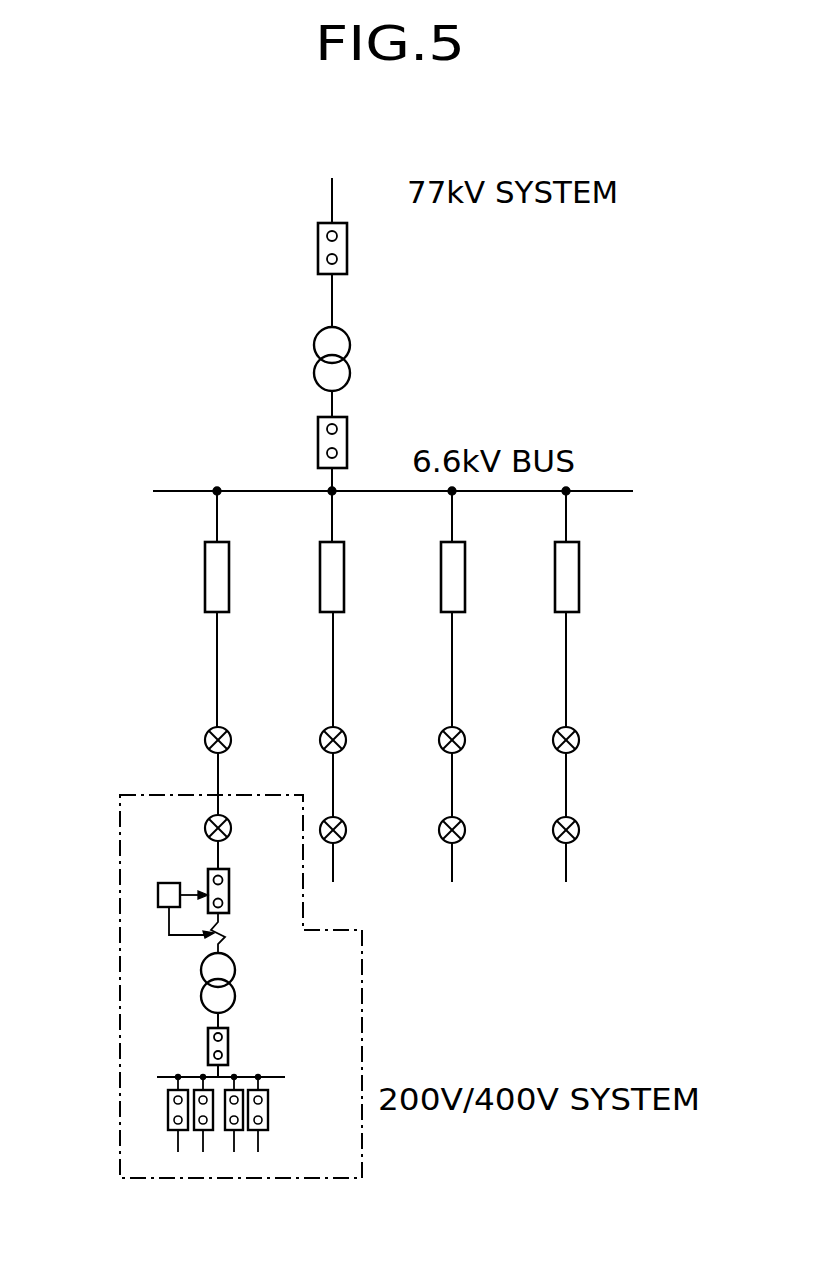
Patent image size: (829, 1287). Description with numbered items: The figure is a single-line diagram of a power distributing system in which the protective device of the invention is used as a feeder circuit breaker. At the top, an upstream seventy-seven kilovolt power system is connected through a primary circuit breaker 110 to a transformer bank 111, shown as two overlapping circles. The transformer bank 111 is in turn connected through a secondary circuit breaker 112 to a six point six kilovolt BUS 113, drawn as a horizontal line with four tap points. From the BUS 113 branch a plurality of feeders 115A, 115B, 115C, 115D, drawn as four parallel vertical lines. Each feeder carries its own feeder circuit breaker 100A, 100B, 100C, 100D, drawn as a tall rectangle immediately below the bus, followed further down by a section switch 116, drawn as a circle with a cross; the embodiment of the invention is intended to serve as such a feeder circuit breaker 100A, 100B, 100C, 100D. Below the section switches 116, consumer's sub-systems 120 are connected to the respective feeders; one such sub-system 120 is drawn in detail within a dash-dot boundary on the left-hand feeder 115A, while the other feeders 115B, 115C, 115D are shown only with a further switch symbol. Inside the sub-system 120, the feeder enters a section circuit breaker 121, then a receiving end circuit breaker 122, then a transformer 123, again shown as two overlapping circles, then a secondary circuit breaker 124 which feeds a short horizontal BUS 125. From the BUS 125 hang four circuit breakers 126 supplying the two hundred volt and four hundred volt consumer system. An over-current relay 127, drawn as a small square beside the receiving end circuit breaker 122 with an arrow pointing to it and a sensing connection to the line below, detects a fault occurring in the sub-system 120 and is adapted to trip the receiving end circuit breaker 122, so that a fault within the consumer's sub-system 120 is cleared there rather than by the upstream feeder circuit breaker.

The primary circuit breaker 110 is at (348, 247).
The transformer bank 111 is at (351, 357).
The secondary circuit breaker 112 is at (348, 428).
The bus 113 is at (173, 489).
The feeder circuit breaker 100A is at (230, 576).
The feeder circuit breaker 100B is at (345, 576).
The feeder circuit breaker 100C is at (466, 576).
The feeder circuit breaker 100D is at (580, 576).
The feeder 115A is at (218, 662).
The feeder 115B is at (334, 662).
The feeder 115C is at (453, 662).
The feeder 115D is at (567, 662).
The section switch 116 is at (231, 740).
The consumer's sub-system 120 is at (120, 952).
The section circuit breaker 121 is at (231, 828).
The receiving end circuit breaker 122 is at (230, 897).
The transformer 123 is at (238, 985).
The secondary circuit breaker 124 is at (229, 1045).
The bus 125 is at (160, 1075).
The circuit breakers 126 is at (270, 1110).
The over-current relay 127 is at (158, 888).